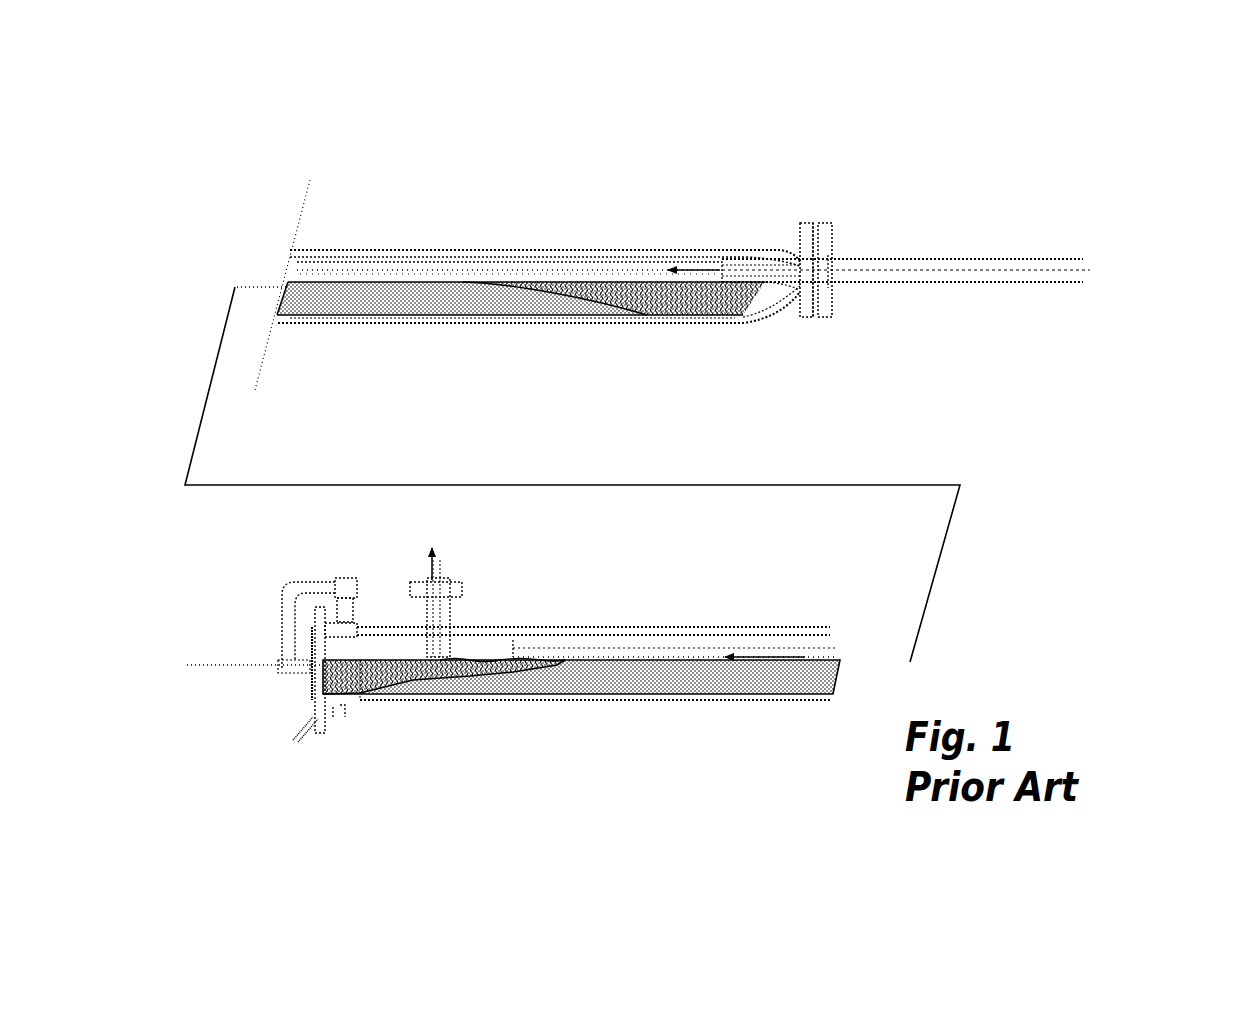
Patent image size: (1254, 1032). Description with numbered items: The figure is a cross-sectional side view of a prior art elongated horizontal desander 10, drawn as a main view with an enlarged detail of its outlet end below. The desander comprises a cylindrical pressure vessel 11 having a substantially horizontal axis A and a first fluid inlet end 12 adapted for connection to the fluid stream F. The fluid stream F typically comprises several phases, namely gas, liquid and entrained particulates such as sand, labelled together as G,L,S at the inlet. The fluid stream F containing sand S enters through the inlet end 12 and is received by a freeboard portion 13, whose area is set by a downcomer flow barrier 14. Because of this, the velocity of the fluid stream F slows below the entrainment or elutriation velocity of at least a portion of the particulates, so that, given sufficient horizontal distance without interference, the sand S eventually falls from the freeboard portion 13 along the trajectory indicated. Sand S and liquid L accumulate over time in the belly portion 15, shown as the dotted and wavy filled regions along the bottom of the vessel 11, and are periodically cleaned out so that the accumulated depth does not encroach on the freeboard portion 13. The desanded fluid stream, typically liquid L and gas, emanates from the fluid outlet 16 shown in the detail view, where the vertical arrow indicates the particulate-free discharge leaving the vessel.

The prior art desander 10 is at (703, 200).
The cylindrical pressure vessel 11 is at (420, 250).
The first fluid inlet end 12 is at (785, 247).
The freeboard portion 13 is at (297, 270).
The downcomer flow barrier 14 is at (517, 647).
The belly portion 15 is at (287, 303).
The fluid outlet 16 is at (413, 592).
The horizontal axis A is at (247, 287).
The sand S is at (377, 293).
The liquid L is at (718, 315).
The fluid stream F is at (1093, 273).
The gas, liquid and sand G,L,S is at (1102, 270).